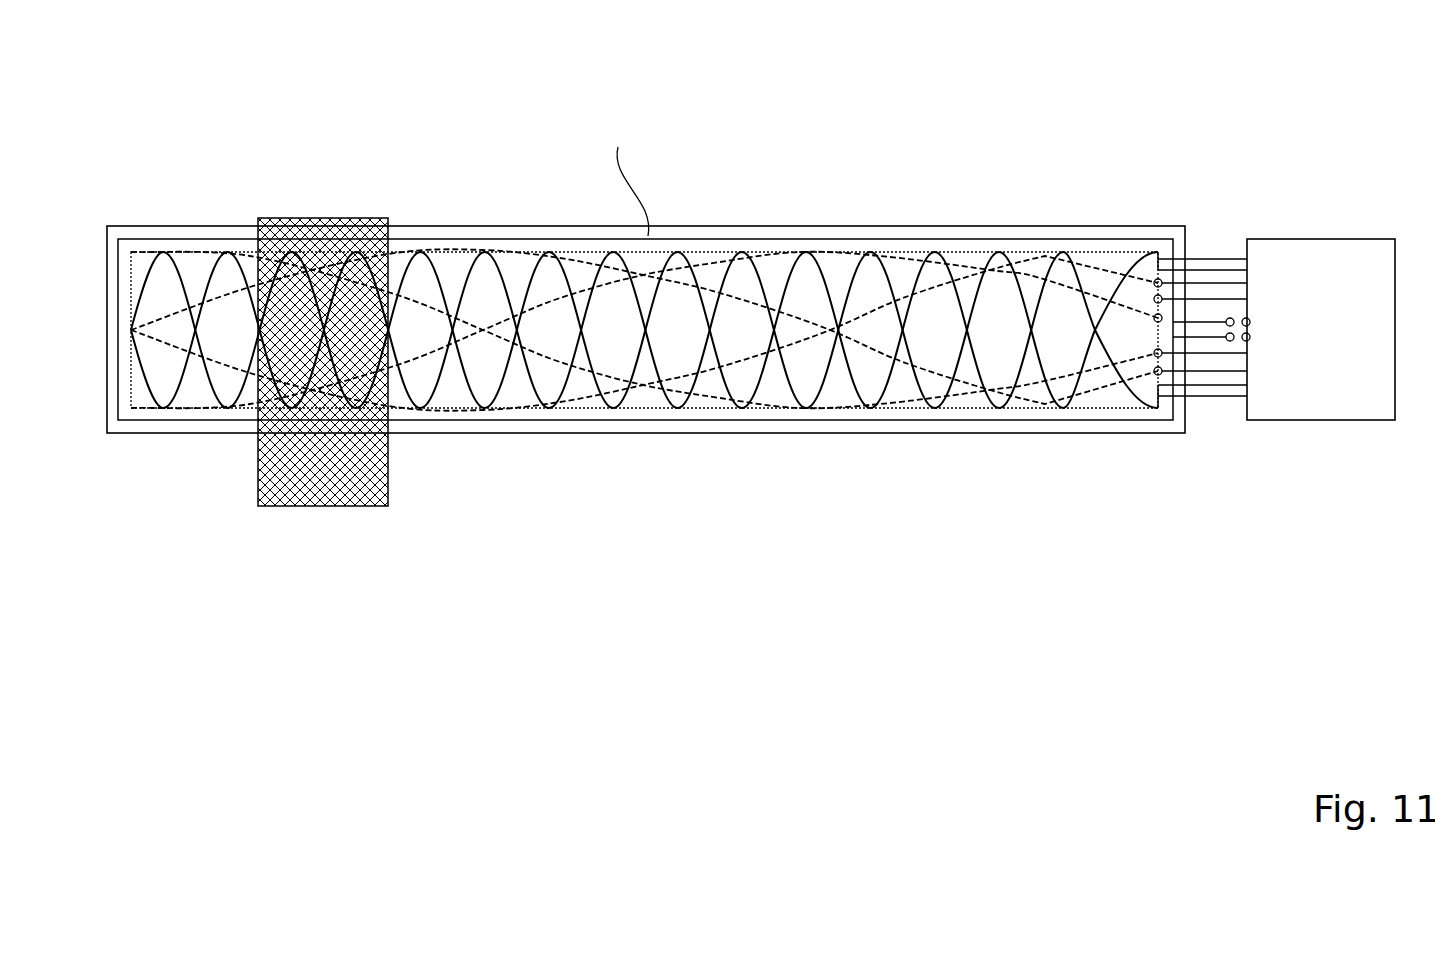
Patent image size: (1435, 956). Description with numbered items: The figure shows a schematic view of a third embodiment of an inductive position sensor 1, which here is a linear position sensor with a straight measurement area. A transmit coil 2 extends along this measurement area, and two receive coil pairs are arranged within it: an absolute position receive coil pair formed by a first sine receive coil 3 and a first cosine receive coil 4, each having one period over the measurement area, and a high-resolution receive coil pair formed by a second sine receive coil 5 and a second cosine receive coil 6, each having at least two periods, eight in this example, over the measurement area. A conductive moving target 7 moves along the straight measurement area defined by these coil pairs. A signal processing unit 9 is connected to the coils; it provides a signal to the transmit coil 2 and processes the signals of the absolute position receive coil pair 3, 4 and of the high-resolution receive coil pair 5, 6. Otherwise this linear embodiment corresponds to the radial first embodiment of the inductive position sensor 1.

The inductive position sensor 1 is at (951, 156).
The transmit coil 2 is at (1042, 433).
The first sine receive coil 3 is at (862, 410).
The first cosine receive coil 4 is at (905, 372).
The second sine receive coil 5 is at (1120, 262).
The second cosine receive coil 6 is at (1113, 283).
The conductive moving target 7 is at (393, 487).
The signal processing unit 9 is at (1302, 373).